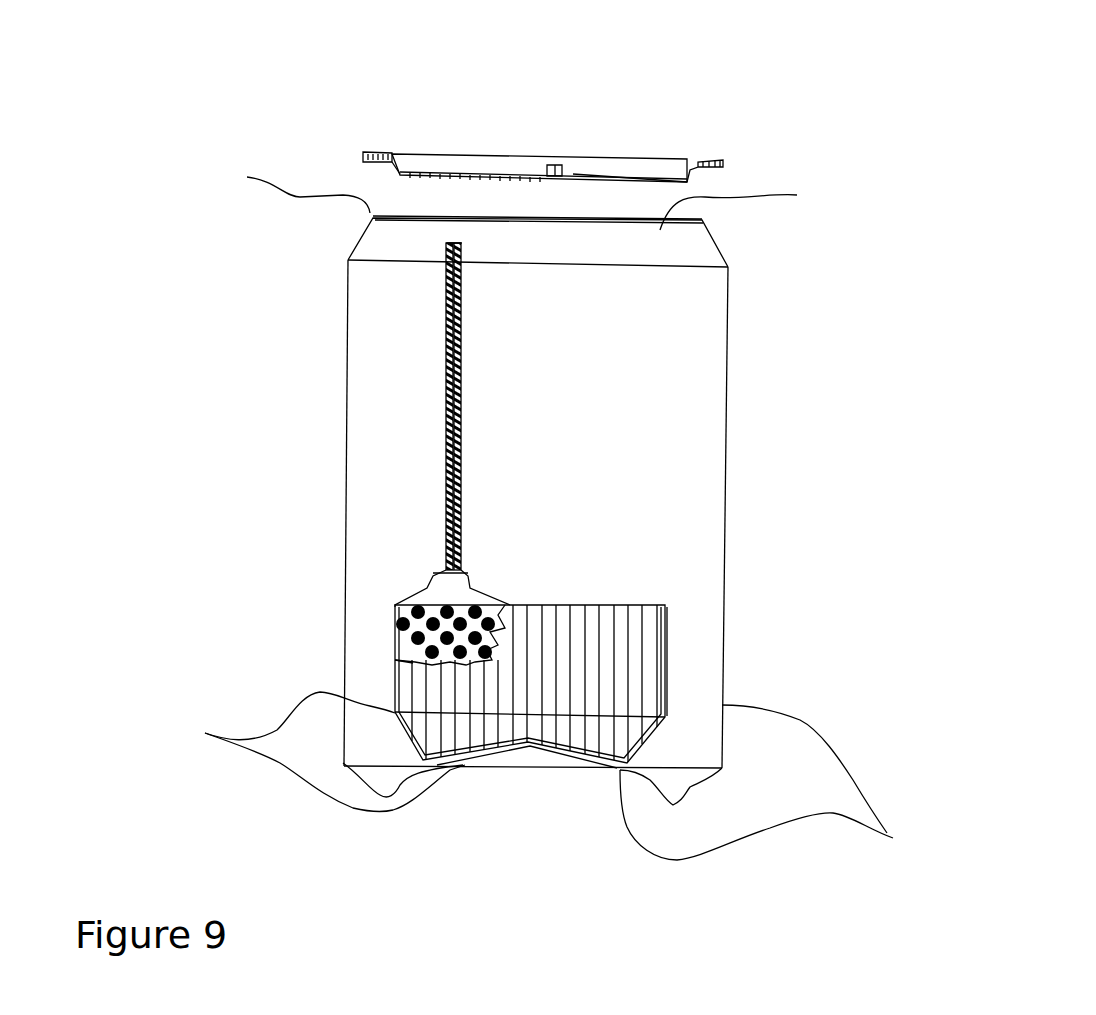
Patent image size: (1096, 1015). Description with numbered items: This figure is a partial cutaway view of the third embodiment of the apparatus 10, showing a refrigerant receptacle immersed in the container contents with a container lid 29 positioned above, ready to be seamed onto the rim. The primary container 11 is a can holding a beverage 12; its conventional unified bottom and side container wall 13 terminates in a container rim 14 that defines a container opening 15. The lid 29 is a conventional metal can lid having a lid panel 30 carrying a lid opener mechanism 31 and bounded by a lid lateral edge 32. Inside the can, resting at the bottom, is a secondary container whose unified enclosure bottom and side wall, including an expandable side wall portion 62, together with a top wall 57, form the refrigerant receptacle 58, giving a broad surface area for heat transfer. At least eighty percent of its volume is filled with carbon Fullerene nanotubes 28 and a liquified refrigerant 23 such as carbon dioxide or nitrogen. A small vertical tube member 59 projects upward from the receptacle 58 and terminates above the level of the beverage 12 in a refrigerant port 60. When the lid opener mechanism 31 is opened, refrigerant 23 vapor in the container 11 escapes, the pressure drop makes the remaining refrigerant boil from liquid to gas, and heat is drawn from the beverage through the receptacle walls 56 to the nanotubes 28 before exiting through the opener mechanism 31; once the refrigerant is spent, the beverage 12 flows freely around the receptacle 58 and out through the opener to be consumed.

The apparatus 10 is at (802, 100).
The primary container 11 is at (728, 358).
The beverage 12 is at (393, 490).
The container wall 13 is at (778, 782).
The container rim 14 is at (290, 186).
The container opening 15 is at (749, 204).
The liquified refrigerant 23 is at (413, 663).
The carbon Fullerene nanotubes 28 is at (397, 612).
The container lid 29 is at (381, 151).
The lid panel 30 is at (430, 172).
The lid opener mechanism 31 is at (613, 177).
The lid lateral edge 32 is at (724, 167).
The receptacle walls 56 is at (317, 751).
The top wall 57 is at (595, 603).
The refrigerant receptacle 58 is at (397, 585).
The tube member 59 is at (442, 412).
The refrigerant port 60 is at (457, 243).
The expandable side wall portion 62 is at (662, 660).